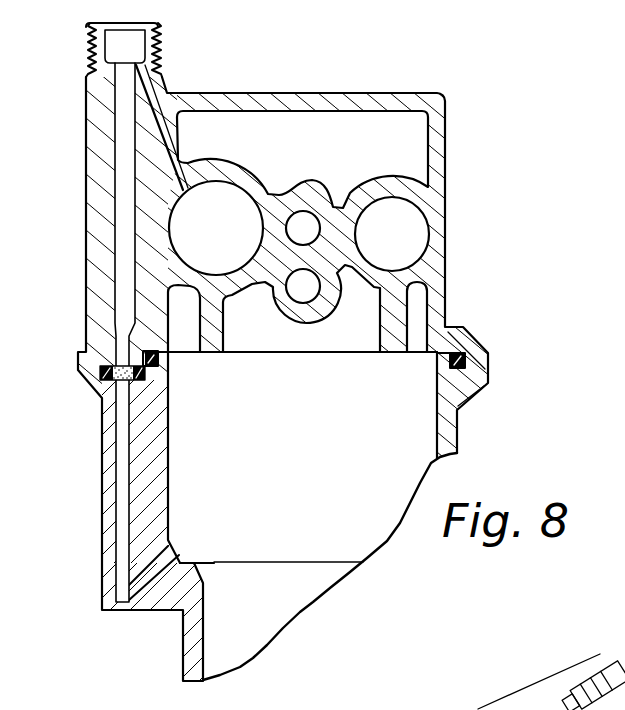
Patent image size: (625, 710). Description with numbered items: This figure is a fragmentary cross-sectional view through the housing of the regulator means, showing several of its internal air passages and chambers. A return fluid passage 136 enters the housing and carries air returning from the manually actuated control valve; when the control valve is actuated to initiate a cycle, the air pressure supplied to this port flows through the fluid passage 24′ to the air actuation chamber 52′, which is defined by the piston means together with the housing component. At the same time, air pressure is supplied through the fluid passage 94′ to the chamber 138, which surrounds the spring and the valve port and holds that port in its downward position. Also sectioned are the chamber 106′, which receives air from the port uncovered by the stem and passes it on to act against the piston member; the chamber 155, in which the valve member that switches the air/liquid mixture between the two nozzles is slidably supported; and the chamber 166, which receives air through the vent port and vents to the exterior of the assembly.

The return fluid passage 136 is at (146, 42).
The fluid passage 94′ is at (165, 140).
The chamber 138 is at (242, 194).
The chamber 106′ is at (303, 210).
The chamber 155 is at (420, 213).
The chamber 166 is at (310, 301).
The fluid passage 24′ is at (114, 313).
The air actuation chamber 52′ is at (174, 473).